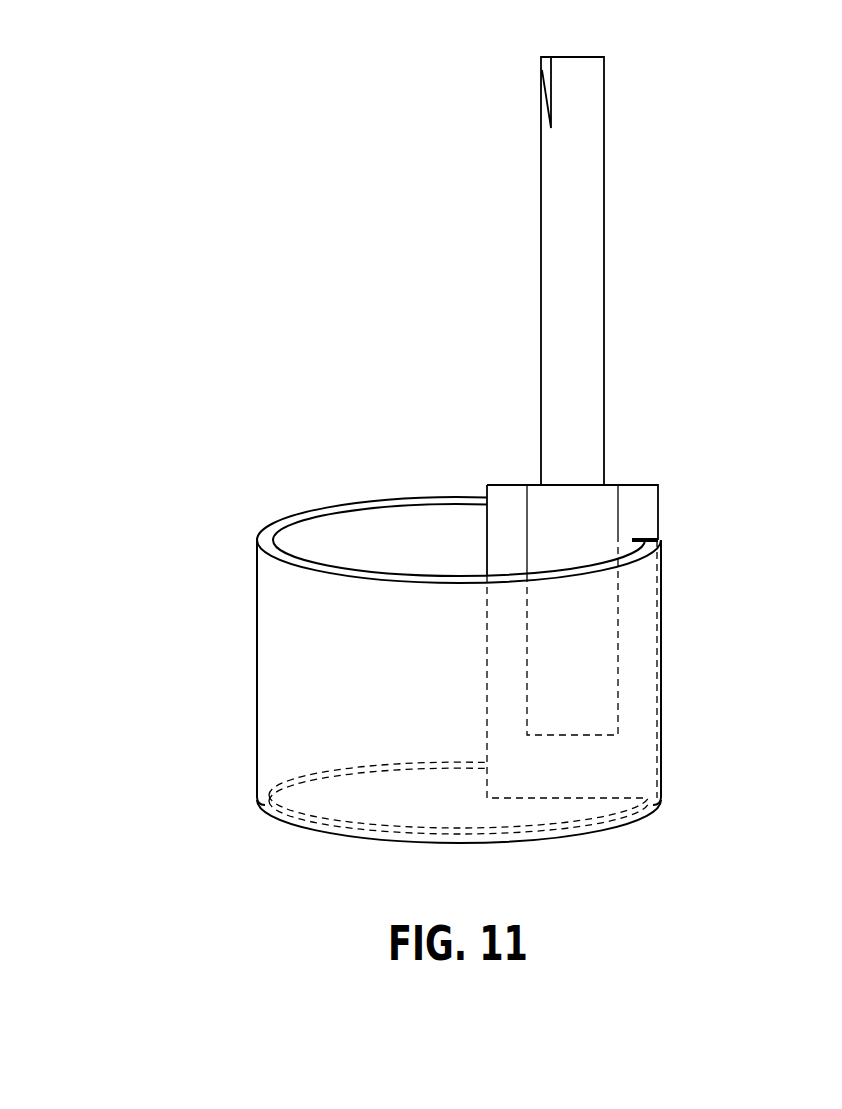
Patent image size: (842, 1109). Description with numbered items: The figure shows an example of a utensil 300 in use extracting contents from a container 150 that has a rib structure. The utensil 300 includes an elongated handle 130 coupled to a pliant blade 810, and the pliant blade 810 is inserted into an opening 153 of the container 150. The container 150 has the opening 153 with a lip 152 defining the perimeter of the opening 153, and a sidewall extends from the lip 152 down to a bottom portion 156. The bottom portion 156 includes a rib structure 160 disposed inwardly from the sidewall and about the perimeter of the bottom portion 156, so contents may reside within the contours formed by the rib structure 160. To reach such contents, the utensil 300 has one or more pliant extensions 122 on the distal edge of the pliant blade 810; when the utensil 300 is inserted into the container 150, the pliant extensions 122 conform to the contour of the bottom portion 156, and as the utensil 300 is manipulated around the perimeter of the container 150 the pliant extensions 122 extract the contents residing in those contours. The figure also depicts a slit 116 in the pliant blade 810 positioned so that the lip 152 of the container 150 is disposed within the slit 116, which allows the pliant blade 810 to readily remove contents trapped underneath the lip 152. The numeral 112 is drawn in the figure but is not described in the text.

The body portion 112 is at (635, 606).
The slit 116 is at (640, 541).
The pliant extension 122 is at (660, 810).
The elongated handle 130 is at (455, 150).
The container 150 is at (376, 596).
The lip 152 is at (459, 482).
The opening 153 is at (352, 533).
The bottom portion 156 is at (273, 821).
The rib structure 160 is at (266, 792).
The utensil 300 is at (593, 425).
The pliant blade 810 is at (628, 458).